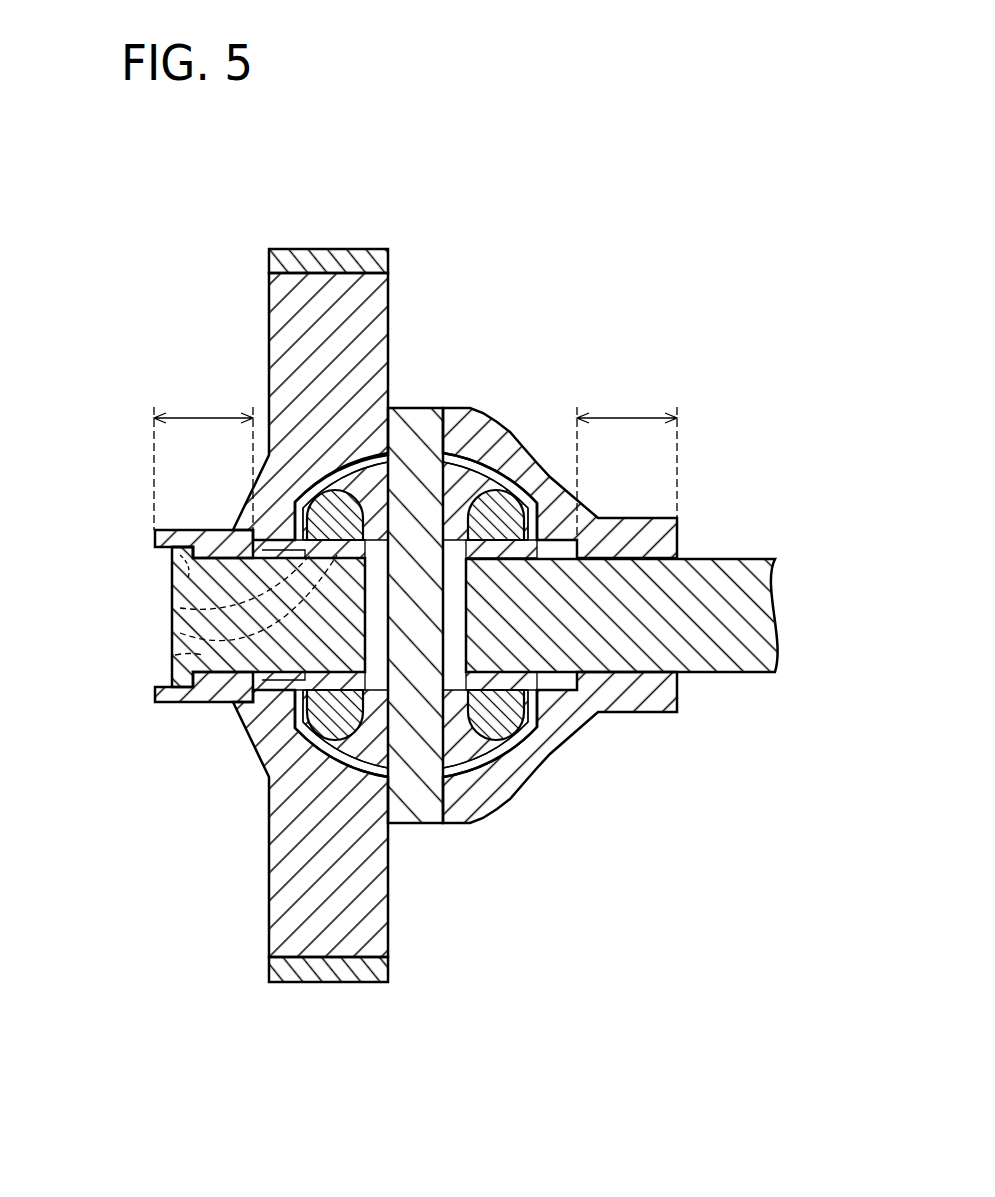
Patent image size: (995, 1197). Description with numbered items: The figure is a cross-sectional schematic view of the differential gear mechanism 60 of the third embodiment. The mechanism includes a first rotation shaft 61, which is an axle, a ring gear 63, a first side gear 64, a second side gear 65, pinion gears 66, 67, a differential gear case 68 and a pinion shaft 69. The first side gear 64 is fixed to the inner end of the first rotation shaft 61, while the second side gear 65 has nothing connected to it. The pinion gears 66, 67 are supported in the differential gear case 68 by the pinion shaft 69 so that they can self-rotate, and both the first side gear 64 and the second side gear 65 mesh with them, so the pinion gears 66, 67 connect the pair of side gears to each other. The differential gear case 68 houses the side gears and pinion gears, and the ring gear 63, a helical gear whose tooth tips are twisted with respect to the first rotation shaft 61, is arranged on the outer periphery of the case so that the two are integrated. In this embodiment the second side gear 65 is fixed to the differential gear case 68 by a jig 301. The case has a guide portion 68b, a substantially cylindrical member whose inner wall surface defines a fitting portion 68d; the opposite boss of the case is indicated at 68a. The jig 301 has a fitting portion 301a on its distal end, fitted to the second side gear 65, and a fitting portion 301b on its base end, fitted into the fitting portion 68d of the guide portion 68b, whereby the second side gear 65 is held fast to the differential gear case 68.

The differential gear mechanism 60 is at (802, 382).
The first rotation shaft 61 is at (752, 627).
The ring gear 63 is at (357, 262).
The first side gear 64 is at (537, 513).
The second side gear 65 is at (270, 601).
The pinion gear 66 is at (470, 740).
The pinion gear 67 is at (468, 497).
The differential gear case 68 is at (483, 430).
The case boss portion 68a is at (625, 416).
The guide portion 68b is at (205, 416).
The fitting portion 68d is at (172, 573).
The pinion shaft 69 is at (423, 787).
The jig 301 is at (203, 655).
The fitting portion 301a is at (270, 627).
The fitting portion 301b is at (170, 593).